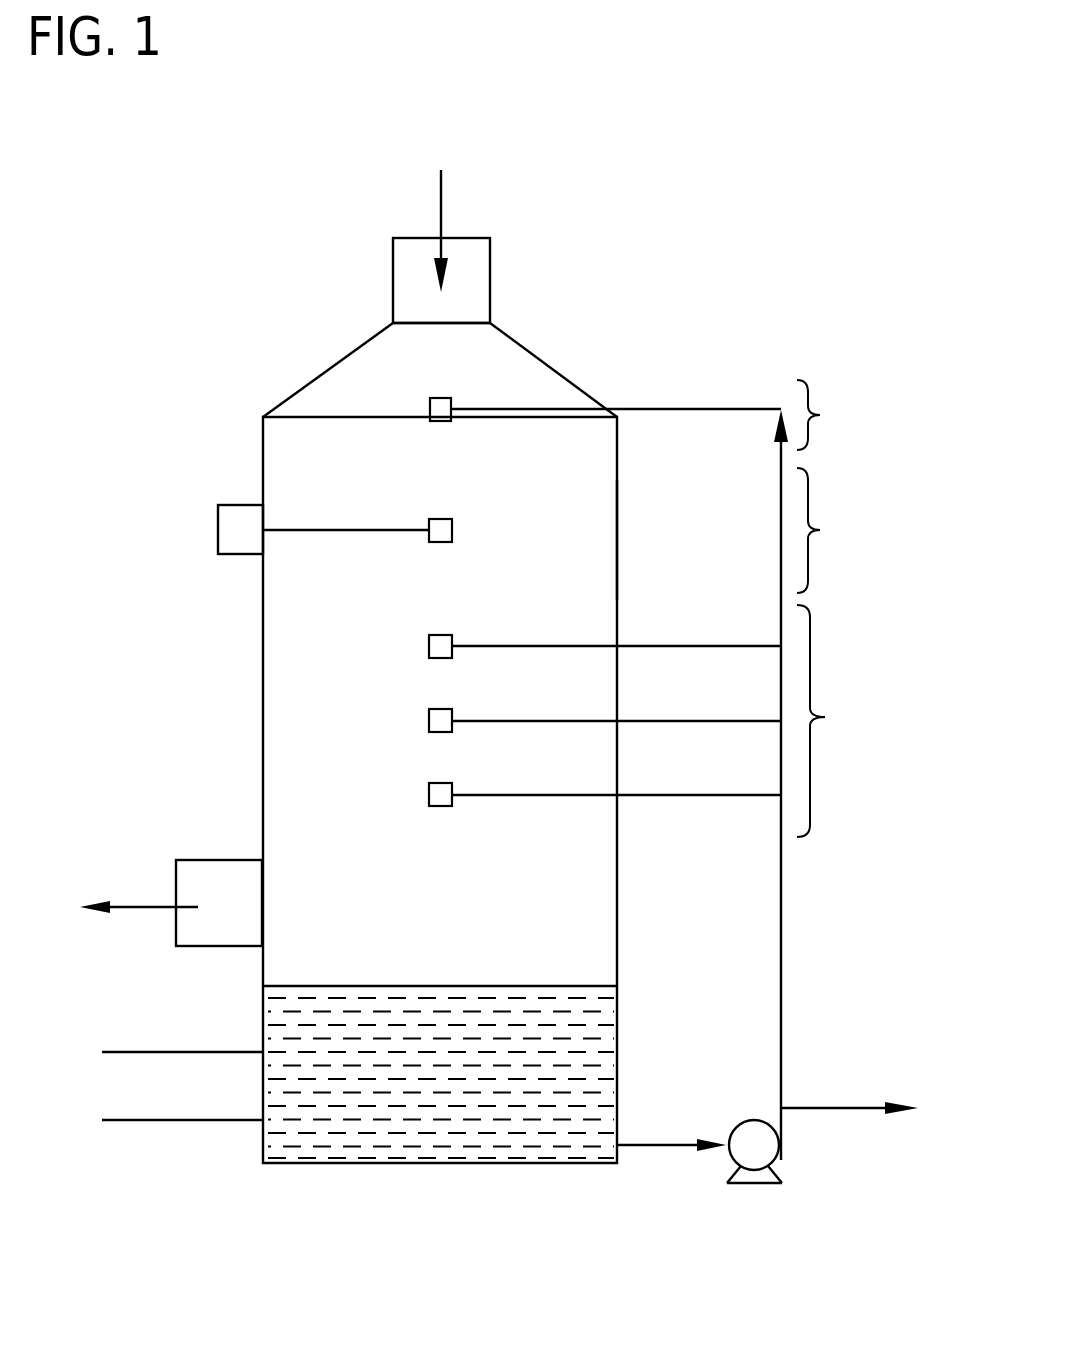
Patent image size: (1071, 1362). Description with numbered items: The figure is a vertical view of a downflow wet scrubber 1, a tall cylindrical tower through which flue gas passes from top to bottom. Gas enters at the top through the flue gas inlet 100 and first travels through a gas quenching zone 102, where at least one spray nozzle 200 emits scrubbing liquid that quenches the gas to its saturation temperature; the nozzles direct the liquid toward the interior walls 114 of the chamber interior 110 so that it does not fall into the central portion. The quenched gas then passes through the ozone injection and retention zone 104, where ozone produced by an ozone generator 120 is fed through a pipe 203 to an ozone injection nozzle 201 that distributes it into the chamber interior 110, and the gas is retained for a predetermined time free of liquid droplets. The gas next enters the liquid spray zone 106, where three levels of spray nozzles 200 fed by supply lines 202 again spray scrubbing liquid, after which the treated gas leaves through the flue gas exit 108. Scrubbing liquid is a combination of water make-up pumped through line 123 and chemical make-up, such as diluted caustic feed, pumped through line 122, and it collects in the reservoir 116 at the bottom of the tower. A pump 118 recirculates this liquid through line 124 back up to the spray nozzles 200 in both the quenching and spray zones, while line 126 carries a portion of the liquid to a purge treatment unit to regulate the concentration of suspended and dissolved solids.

The wet scrubber 1 is at (826, 151).
The flue gas inlet 100 is at (472, 238).
The gas quenching zone 102 is at (835, 415).
The ozone injection and retention zone 104 is at (844, 530).
The liquid spray zone 106 is at (842, 721).
The flue gas exit 108 is at (198, 860).
The chamber interior 110 is at (412, 912).
The interior walls 114 is at (615, 560).
The reservoir 116 is at (452, 1112).
The pump 118 is at (753, 1185).
The ozone generator 120 is at (218, 522).
The line 122 is at (160, 1122).
The line 123 is at (161, 1050).
The line 124 is at (783, 1020).
The line 126 is at (835, 1107).
The spray nozzles 200 is at (440, 398).
The ozone injection nozzle 201 is at (452, 531).
The supply pipe 202 is at (743, 408).
The pipe 203 is at (333, 530).